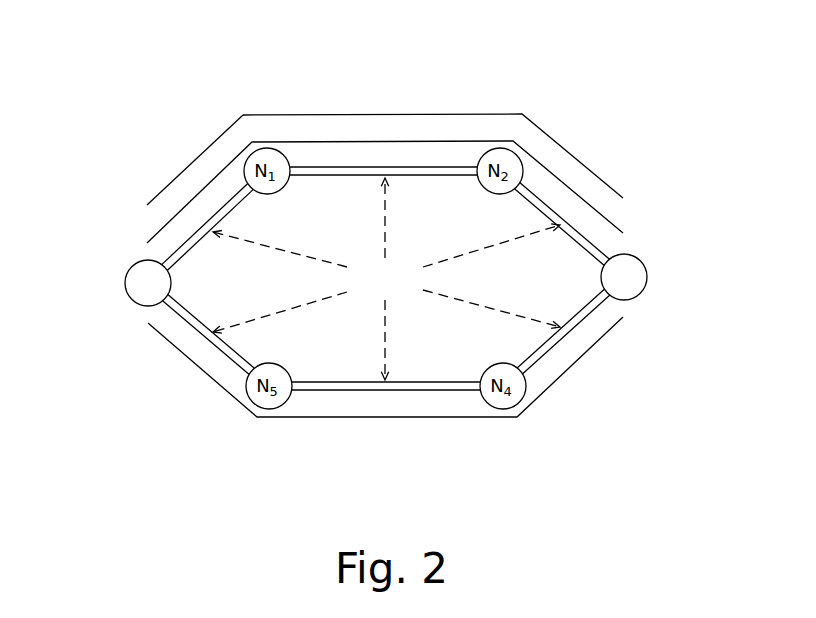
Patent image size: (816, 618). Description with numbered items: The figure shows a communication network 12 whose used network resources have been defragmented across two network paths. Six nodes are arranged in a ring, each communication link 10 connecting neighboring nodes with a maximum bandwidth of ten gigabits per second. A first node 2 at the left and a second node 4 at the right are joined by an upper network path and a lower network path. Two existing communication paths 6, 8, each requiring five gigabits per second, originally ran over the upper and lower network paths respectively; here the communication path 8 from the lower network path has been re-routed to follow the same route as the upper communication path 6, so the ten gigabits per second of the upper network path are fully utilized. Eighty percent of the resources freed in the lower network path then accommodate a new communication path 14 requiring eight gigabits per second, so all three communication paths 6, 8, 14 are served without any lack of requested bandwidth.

The first node 2 is at (115, 303).
The second node 4 is at (657, 265).
The upper communication path 6 is at (418, 141).
The communication path 8 is at (388, 113).
The communication link 10 is at (386, 279).
The communication network 12 is at (188, 166).
The new communication path 14 is at (417, 417).